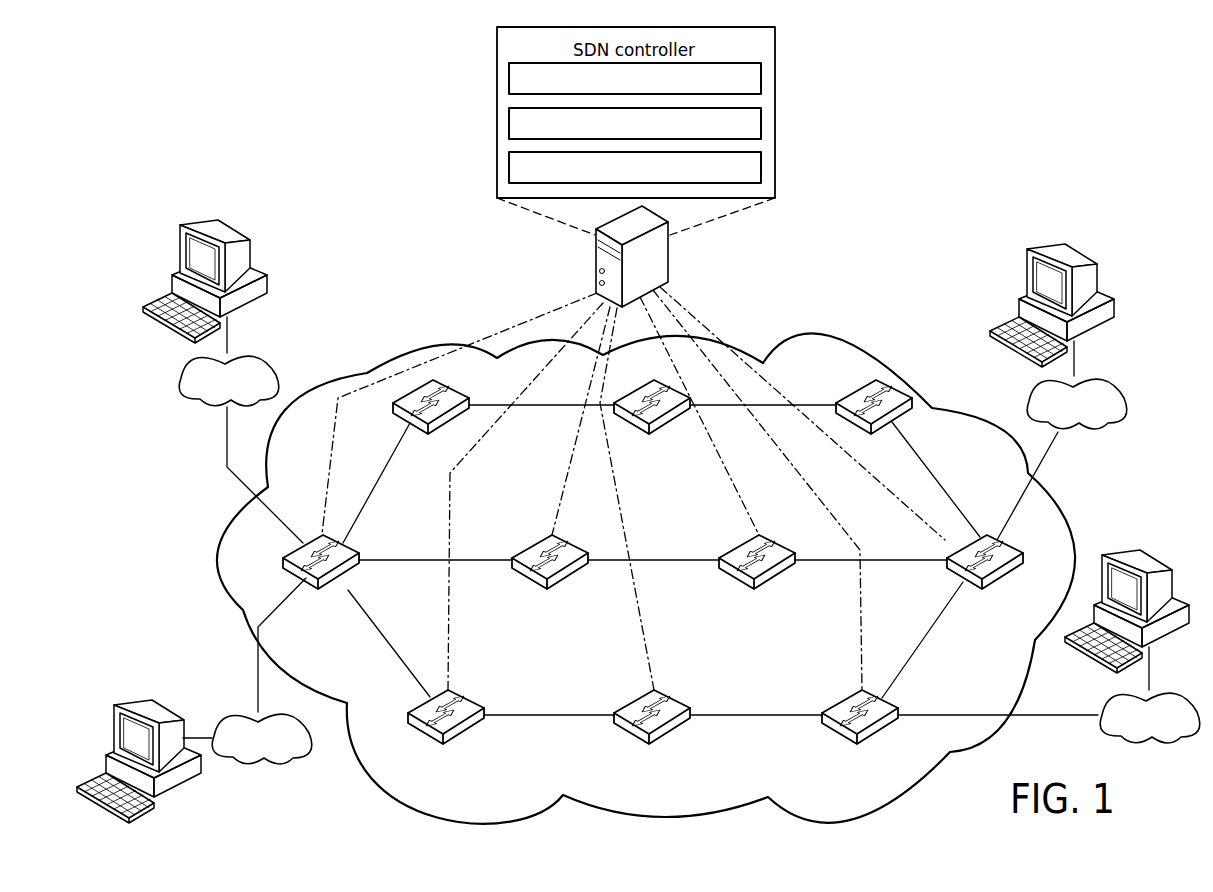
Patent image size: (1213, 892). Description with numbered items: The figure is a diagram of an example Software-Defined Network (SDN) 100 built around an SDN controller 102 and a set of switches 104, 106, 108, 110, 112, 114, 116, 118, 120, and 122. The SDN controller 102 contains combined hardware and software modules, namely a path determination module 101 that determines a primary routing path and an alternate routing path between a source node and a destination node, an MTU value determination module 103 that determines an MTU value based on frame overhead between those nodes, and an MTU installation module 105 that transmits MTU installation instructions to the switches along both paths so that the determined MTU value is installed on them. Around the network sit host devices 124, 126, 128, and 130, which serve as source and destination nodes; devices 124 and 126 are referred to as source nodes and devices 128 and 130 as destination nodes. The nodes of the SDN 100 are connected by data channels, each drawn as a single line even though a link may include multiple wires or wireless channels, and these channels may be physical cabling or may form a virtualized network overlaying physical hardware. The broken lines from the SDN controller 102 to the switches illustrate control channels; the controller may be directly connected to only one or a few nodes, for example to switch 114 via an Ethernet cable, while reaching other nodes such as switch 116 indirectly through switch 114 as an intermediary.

The Software-Defined Network 100 is at (120, 88).
The path determination module 101 is at (509, 78).
The SDN controller 102 is at (669, 258).
The MTU value determination module 103 is at (509, 124).
The switch 104 is at (354, 544).
The MTU installation module 105 is at (509, 168).
The switch 106 is at (447, 381).
The switch 108 is at (572, 580).
The switch 110 is at (482, 698).
The switch 112 is at (672, 426).
The switch 114 is at (777, 580).
The switch 116 is at (682, 700).
The switch 118 is at (903, 384).
The switch 120 is at (891, 698).
The switch 122 is at (1003, 582).
The host device 124 is at (251, 253).
The host device 126 is at (115, 723).
The host device 128 is at (1099, 282).
The host device 130 is at (1157, 557).